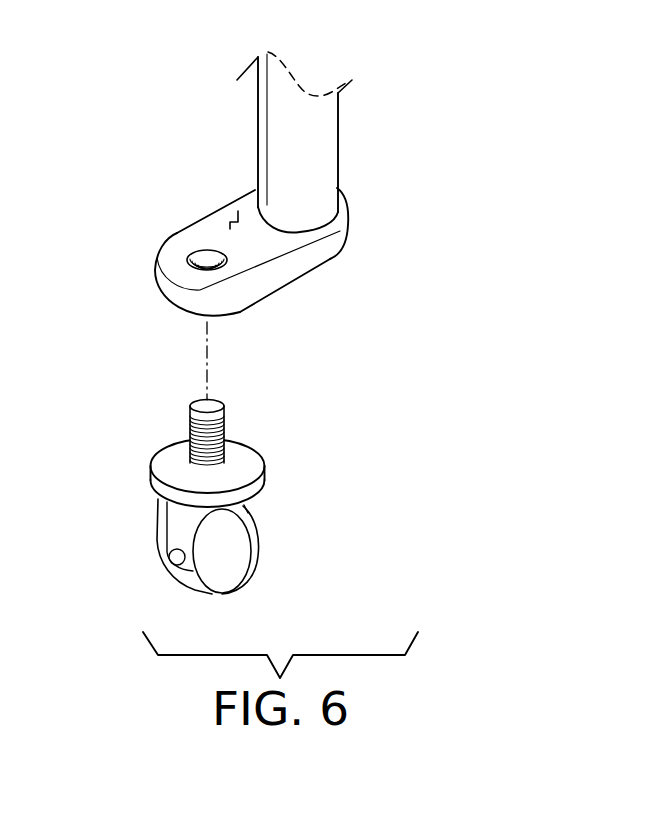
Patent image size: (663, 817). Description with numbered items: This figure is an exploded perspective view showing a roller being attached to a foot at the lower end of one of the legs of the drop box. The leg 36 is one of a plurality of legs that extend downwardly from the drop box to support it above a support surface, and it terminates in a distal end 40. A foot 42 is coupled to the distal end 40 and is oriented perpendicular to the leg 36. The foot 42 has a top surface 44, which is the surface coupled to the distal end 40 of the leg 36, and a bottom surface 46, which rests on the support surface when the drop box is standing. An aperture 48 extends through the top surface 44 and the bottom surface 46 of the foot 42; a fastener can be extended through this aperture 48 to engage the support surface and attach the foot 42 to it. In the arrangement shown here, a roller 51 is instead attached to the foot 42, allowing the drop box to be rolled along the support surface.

The leg 36 is at (338, 117).
The distal end 40 is at (234, 252).
The foot 42 is at (158, 256).
The top surface 44 is at (237, 211).
The bottom surface 46 is at (257, 304).
The aperture 48 is at (193, 244).
The roller 51 is at (160, 510).